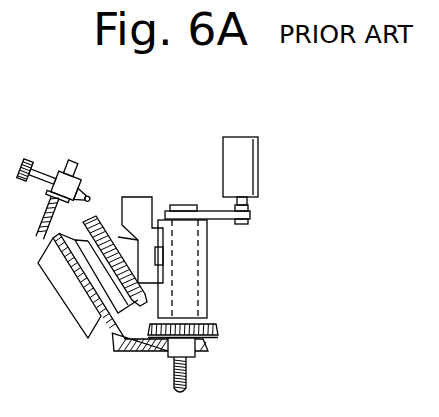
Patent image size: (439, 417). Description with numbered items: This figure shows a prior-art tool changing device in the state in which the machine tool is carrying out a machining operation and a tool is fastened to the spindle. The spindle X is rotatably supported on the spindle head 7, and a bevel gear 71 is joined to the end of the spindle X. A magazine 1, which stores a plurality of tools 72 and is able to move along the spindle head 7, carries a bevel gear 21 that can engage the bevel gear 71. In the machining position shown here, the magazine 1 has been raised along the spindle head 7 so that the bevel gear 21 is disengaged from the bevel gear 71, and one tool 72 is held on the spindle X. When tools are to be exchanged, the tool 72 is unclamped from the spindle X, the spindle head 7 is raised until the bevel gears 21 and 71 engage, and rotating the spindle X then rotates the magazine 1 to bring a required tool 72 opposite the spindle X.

The magazine 1 is at (72, 253).
The bevel gear 21 is at (94, 230).
The spindle head 7 is at (208, 291).
The bevel gear 71 is at (221, 331).
The tool 72 is at (189, 374).
The spindle X is at (207, 249).